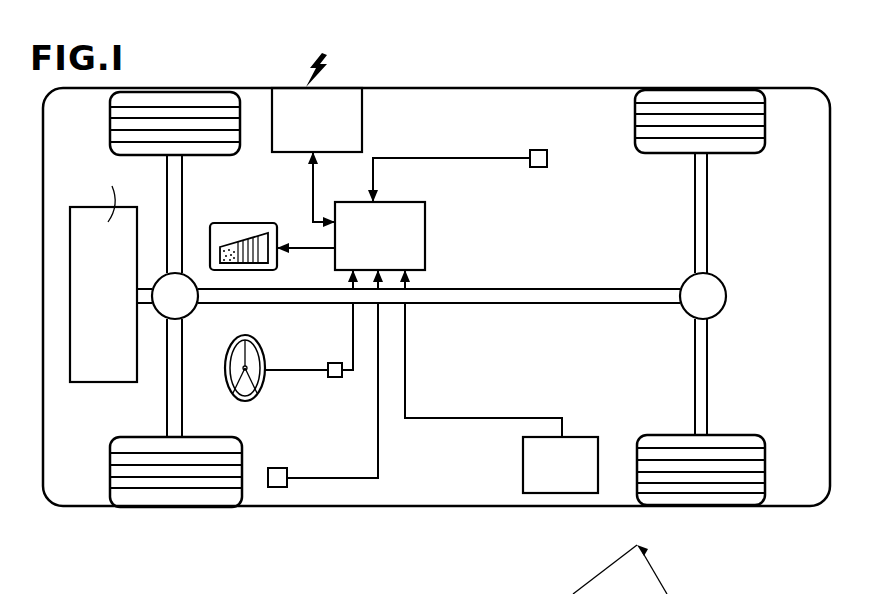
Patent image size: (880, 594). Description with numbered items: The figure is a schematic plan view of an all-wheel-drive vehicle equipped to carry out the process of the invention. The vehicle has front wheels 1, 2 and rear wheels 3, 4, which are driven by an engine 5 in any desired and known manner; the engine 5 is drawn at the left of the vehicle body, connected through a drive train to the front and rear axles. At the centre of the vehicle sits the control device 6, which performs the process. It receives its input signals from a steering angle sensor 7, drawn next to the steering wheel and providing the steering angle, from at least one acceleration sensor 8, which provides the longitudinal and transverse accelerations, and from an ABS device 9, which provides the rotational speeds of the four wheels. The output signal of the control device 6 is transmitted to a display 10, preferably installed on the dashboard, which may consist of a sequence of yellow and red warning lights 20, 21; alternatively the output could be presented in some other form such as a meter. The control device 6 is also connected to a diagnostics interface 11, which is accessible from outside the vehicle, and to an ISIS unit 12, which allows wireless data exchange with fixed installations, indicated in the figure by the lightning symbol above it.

The front wheel 1 is at (173, 102).
The front wheel 2 is at (167, 497).
The rear wheel 3 is at (703, 100).
The rear wheel 4 is at (703, 492).
The engine 5 is at (88, 368).
The control device 6 is at (385, 212).
The steering angle sensor 7 is at (337, 383).
The acceleration sensor 8 is at (543, 150).
The ABS device 9 is at (567, 478).
The display 10 is at (222, 232).
The diagnostics interface 11 is at (272, 490).
The ISIS unit 12 is at (338, 103).
The yellow warning light 20 is at (230, 245).
The red warning light 21 is at (250, 233).